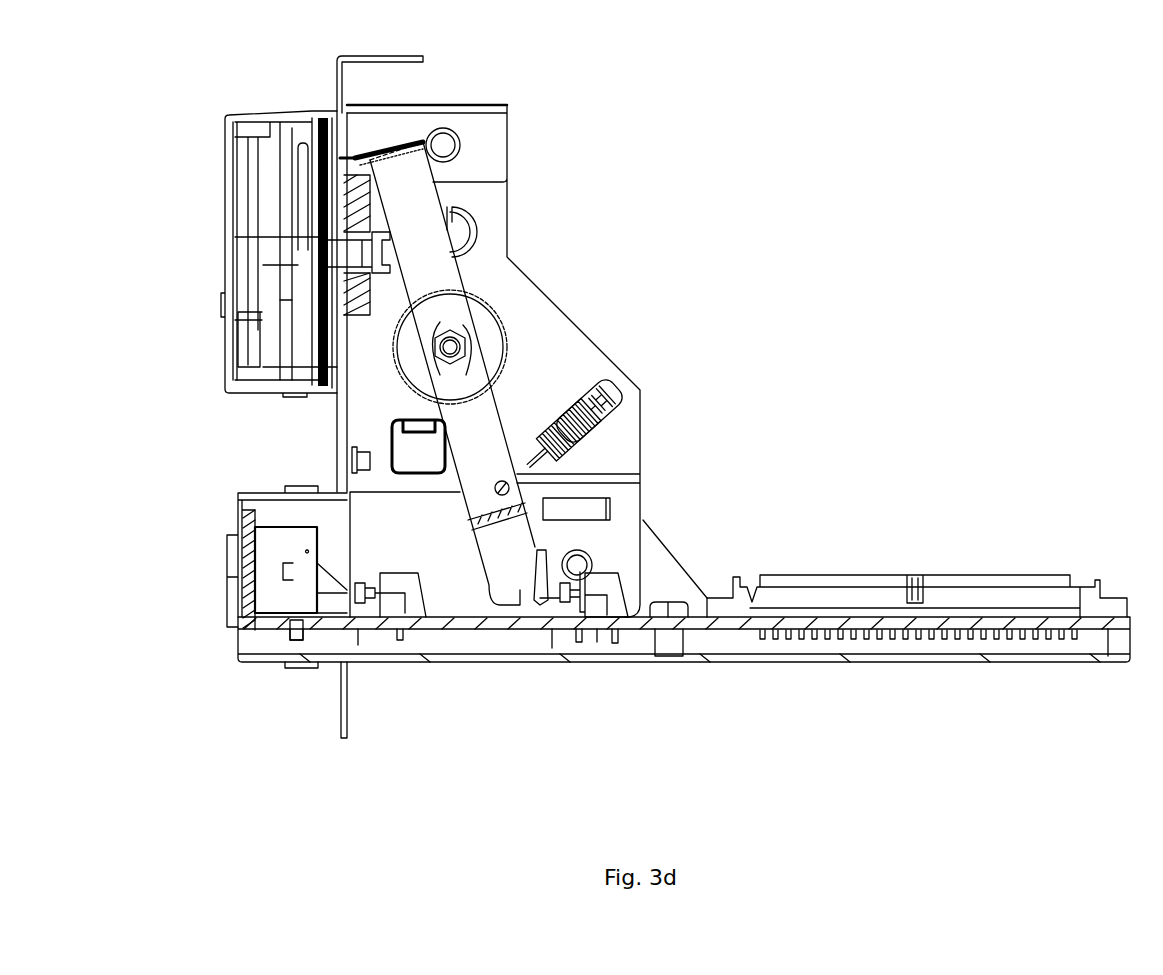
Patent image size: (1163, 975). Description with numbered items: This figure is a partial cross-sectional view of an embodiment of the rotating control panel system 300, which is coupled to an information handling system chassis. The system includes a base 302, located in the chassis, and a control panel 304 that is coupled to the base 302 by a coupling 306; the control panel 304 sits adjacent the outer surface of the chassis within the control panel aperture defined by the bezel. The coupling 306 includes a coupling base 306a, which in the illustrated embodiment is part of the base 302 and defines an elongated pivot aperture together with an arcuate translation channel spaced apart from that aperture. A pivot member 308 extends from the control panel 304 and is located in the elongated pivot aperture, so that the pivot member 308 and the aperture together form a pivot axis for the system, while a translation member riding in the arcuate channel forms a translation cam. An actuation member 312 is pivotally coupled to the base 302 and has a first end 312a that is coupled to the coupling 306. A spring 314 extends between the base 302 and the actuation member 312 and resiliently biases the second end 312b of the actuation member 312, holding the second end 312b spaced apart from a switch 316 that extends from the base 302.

The rotating control panel system 300 is at (937, 190).
The base 302 is at (537, 337).
The control panel 304 is at (230, 337).
The coupling 306 is at (363, 337).
The coupling base 306a is at (375, 303).
The pivot member 308 is at (373, 252).
The actuation member 312 is at (477, 420).
The first end 312a is at (347, 158).
The second end 312b is at (537, 578).
The spring 314 is at (590, 432).
The switch 316 is at (610, 587).